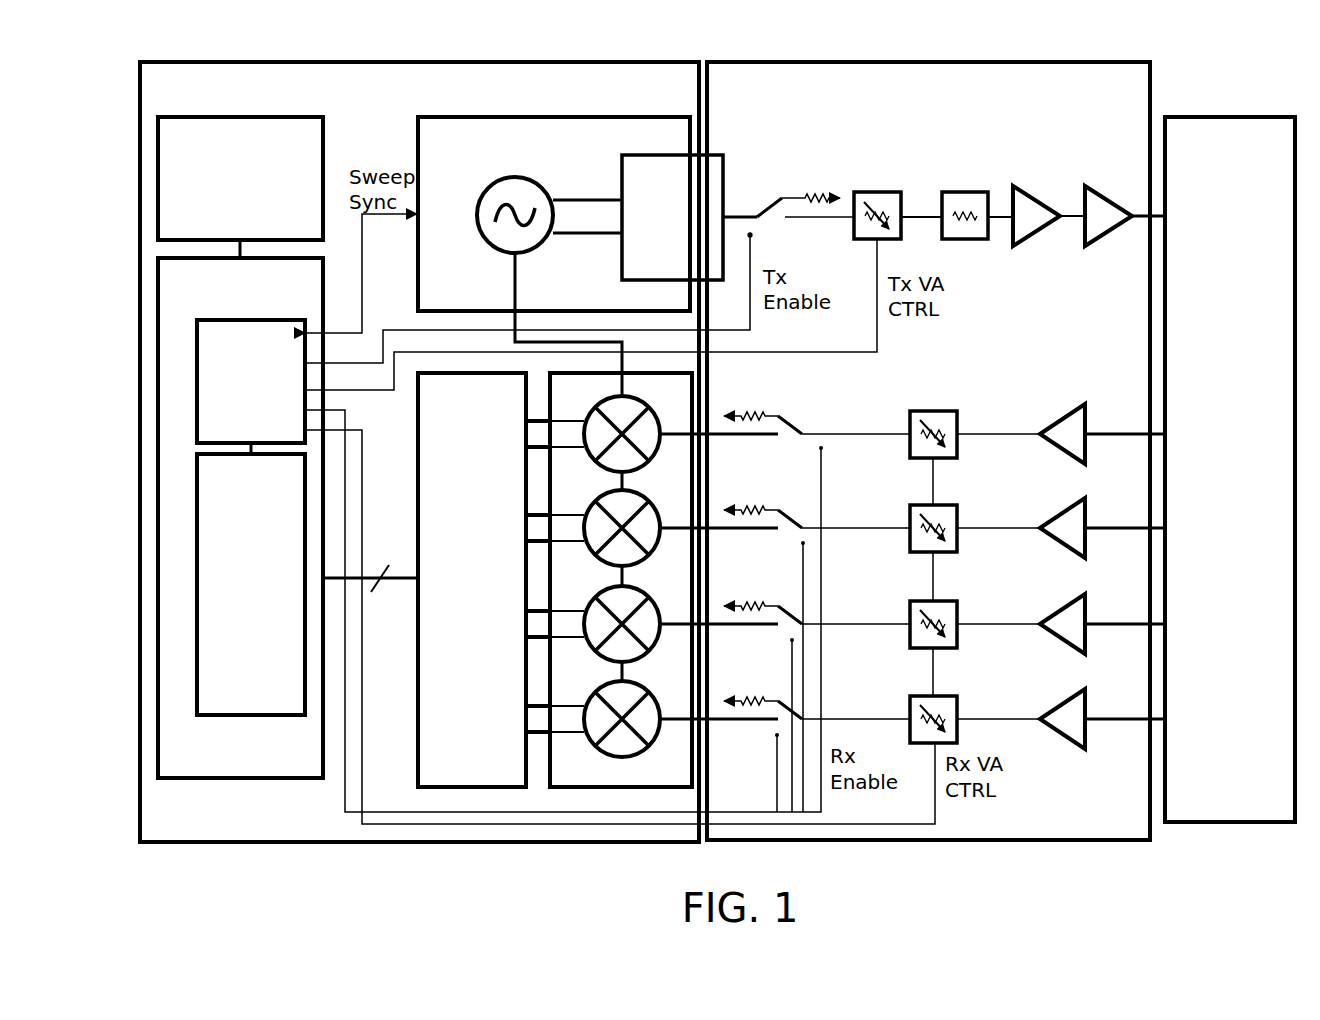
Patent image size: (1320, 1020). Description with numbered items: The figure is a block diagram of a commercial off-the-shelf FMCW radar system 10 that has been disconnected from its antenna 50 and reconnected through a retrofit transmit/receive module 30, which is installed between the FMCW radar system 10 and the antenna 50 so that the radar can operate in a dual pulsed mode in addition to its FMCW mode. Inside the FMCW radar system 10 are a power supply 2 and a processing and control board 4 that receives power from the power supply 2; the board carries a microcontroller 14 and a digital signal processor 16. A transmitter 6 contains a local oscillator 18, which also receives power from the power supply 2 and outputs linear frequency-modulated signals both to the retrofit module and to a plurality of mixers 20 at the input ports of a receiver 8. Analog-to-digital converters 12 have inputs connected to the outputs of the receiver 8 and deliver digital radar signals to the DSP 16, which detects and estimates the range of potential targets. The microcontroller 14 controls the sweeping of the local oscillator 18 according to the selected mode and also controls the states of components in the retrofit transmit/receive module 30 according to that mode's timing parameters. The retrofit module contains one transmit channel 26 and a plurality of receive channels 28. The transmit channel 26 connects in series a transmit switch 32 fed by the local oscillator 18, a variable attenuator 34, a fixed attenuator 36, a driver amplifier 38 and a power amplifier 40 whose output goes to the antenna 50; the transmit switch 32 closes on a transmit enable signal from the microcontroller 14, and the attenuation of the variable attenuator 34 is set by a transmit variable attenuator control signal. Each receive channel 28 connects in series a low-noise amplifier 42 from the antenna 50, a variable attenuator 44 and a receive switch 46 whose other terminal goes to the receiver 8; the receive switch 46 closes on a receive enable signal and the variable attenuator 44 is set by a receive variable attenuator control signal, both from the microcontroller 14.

The power supply 2 is at (274, 117).
The processing and control board 4 is at (240, 778).
The transmitter 6 is at (418, 150).
The receiver 8 is at (602, 787).
The FMCW radar system 10 is at (578, 56).
The analog-to-digital converters 12 is at (418, 738).
The microcontroller 14 is at (247, 320).
The digital signal processor 16 is at (248, 715).
The local oscillator 18 is at (480, 243).
The mixers 20 is at (652, 453).
The transmit channel 26 is at (1028, 130).
The receive channels 28 is at (1046, 780).
The retrofit transmit/receive module 30 is at (1008, 56).
The transmit switch 32 is at (770, 209).
The variable attenuator 34 is at (880, 192).
The fixed attenuator 36 is at (966, 192).
The driver amplifier 38 is at (1033, 190).
The power amplifier 40 is at (1098, 245).
The low-noise amplifier 42 is at (1066, 412).
The variable attenuator 44 is at (942, 411).
The receive switch 46 is at (797, 426).
The antenna 50 is at (1245, 117).